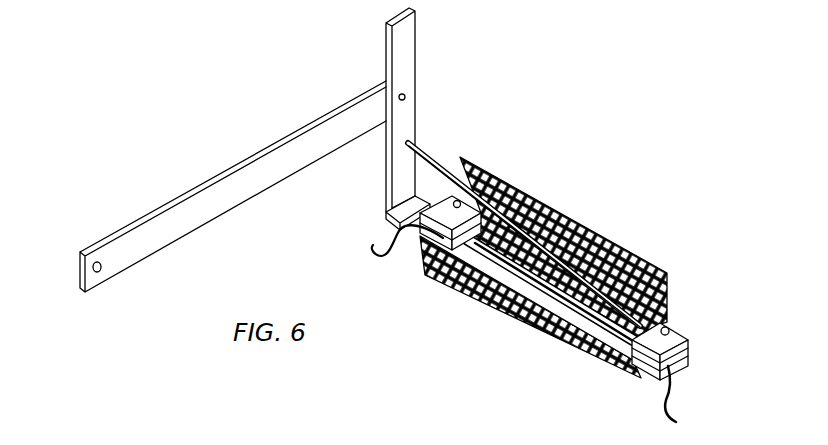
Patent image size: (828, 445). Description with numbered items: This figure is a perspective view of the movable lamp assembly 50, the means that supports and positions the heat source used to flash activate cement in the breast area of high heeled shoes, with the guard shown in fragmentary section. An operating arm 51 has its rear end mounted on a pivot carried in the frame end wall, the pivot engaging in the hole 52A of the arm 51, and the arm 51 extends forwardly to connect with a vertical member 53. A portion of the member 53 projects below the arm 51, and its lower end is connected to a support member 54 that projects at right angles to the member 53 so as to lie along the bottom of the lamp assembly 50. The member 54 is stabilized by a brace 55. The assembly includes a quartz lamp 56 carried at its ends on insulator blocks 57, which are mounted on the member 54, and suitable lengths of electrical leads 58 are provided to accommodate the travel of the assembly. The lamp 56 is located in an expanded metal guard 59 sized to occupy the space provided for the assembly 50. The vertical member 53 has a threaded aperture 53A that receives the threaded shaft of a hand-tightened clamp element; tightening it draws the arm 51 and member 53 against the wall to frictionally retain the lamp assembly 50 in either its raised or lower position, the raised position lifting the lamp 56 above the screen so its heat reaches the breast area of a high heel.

The movable lamp assembly 50 is at (214, 145).
The operating arm 51 is at (186, 234).
The hole 52A is at (90, 285).
The vertical member 53 is at (408, 32).
The threaded aperture 53A is at (408, 98).
The support member 54 is at (386, 213).
The brace 55 is at (422, 146).
The quartz lamp 56 is at (503, 290).
The insulator blocks 57 is at (421, 238).
The electrical leads 58 is at (373, 246).
The expanded metal guard 59 is at (512, 183).